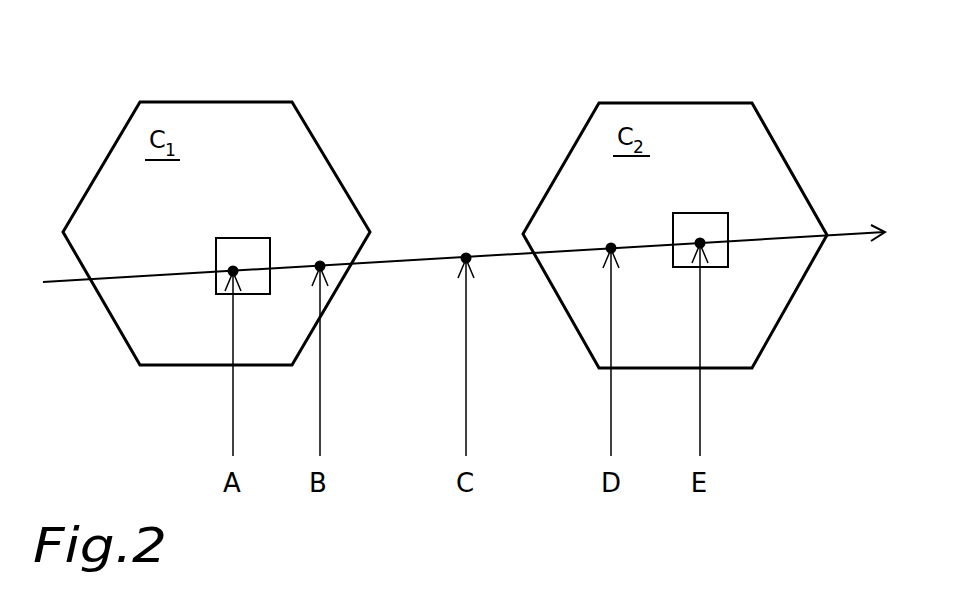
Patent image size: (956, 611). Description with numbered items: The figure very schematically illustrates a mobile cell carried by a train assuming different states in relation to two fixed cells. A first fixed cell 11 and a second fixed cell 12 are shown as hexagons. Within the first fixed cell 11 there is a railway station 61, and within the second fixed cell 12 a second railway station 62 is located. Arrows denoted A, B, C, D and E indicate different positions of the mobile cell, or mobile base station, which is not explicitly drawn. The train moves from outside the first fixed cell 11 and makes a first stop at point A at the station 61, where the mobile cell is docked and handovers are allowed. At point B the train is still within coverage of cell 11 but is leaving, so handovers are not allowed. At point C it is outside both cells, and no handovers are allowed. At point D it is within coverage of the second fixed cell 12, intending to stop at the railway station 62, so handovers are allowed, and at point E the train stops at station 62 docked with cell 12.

The first fixed cell 11 is at (226, 101).
The second fixed cell 12 is at (703, 103).
The railway station 61 is at (262, 237).
The second railway station 62 is at (704, 212).